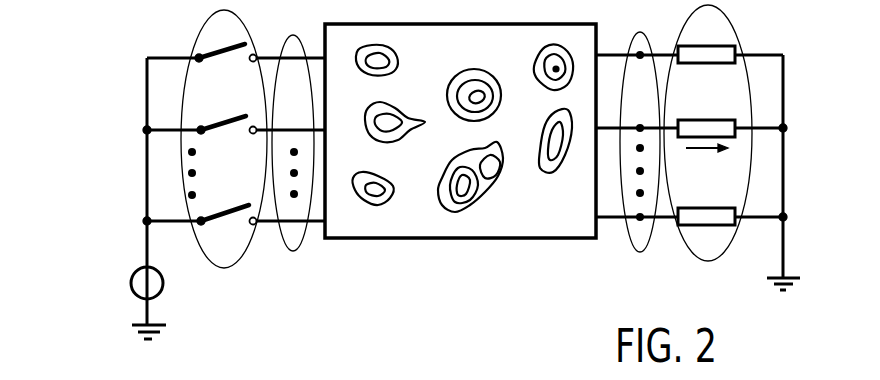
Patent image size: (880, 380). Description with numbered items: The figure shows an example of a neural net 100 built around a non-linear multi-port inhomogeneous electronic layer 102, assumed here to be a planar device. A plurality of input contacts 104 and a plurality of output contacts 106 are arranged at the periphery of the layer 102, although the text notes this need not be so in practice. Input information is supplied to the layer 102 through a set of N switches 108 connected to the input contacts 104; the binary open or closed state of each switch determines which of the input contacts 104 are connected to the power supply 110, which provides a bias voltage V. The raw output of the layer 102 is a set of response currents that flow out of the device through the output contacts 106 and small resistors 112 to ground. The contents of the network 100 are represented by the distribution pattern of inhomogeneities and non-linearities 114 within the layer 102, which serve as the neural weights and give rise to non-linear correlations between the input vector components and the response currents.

The neural net 100 is at (457, 175).
The non-linear multi-port inhomogeneous electronic layer 102 is at (378, 240).
The input contacts 104 is at (293, 251).
The output contacts 106 is at (643, 252).
The switches 108 is at (232, 266).
The power supply 110 is at (163, 289).
The small resistors 112 is at (722, 258).
The inhomogeneities and non-linearities 114 is at (392, 198).